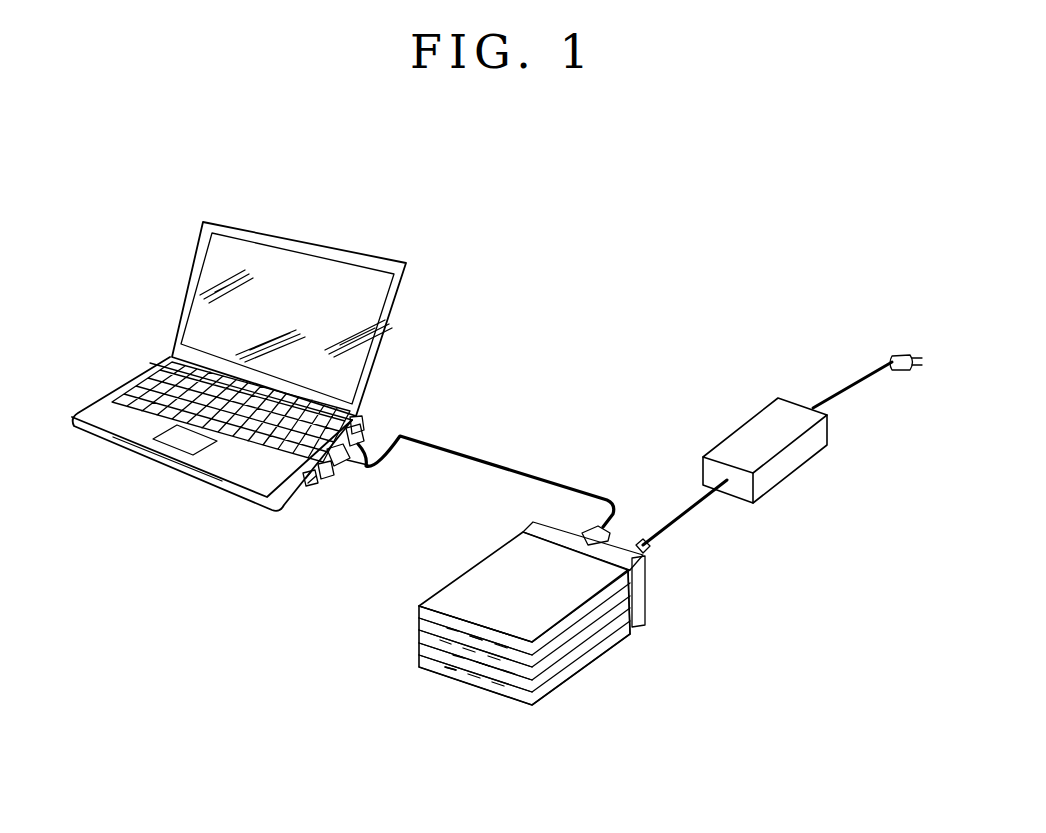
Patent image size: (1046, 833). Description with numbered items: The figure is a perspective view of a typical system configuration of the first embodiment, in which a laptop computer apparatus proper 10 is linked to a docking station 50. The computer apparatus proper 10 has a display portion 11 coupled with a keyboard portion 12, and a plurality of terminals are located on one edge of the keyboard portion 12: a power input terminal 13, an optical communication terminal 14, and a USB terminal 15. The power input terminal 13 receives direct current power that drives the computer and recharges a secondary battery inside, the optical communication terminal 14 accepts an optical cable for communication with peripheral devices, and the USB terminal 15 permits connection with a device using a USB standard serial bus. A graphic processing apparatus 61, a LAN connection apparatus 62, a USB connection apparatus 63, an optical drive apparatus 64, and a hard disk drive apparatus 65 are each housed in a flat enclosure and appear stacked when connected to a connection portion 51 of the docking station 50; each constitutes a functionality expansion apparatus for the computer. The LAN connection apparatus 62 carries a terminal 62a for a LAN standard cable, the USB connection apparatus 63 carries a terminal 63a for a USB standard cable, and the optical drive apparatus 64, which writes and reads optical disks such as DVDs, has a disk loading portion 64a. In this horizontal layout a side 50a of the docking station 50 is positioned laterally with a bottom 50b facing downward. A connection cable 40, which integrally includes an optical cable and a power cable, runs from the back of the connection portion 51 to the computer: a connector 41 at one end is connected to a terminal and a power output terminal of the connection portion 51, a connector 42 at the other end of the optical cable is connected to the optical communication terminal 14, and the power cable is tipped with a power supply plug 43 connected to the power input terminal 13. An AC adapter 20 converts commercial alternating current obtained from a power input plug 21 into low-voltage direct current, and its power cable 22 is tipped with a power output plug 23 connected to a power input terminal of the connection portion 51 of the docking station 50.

The computer apparatus proper 10 is at (320, 243).
The display portion 11 is at (353, 299).
The keyboard portion 12 is at (158, 385).
The power input terminal 13 is at (360, 428).
The optical communication terminal 14 is at (323, 475).
The USB terminal 15 is at (308, 486).
The AC adapter 20 is at (780, 470).
The power input plug 21 is at (897, 350).
The power cable 22 is at (678, 523).
The power output plug 23 is at (650, 548).
The connection cable 40 is at (475, 463).
The connector 41 is at (580, 533).
The connector 42 is at (342, 468).
The power supply plug 43 is at (366, 440).
The docking station 50 is at (577, 676).
The side 50a is at (641, 620).
The bottom 50b is at (637, 628).
The connection portion 51 is at (533, 532).
The graphic processing apparatus 61 is at (419, 610).
The LAN connection apparatus 62 is at (419, 624).
The terminal 62a is at (517, 640).
The USB connection apparatus 63 is at (419, 636).
The terminal 63a is at (512, 662).
The optical drive apparatus 64 is at (419, 649).
The disk loading portion 64a is at (447, 662).
The hard disk drive apparatus 65 is at (419, 661).